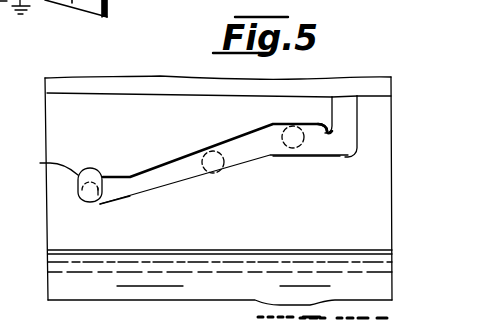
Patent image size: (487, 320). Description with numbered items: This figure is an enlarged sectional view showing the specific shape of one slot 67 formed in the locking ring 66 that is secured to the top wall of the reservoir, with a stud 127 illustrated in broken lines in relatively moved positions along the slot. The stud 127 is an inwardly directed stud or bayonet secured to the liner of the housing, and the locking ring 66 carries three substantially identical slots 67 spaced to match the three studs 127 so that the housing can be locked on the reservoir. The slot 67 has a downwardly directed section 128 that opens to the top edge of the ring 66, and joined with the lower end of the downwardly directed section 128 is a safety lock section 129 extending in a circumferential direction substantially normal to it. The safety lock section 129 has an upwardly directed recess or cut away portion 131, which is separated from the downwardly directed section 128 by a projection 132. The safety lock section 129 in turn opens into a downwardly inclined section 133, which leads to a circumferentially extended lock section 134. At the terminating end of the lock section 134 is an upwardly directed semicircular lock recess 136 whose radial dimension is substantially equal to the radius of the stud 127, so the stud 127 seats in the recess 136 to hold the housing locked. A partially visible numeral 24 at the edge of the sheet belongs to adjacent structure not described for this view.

The locking ring 66 is at (57, 132).
The housing 24 is at (7, 216).
The semicircular lock recess 136 is at (46, 164).
The downwardly inclined section 133 is at (173, 184).
The stud 127 is at (90, 206).
The lock section 134 is at (112, 195).
The cut away portion 131 is at (278, 121).
The projection 132 is at (323, 113).
The slot 67 is at (345, 90).
The safety lock section 129 is at (279, 149).
The downwardly directed section 128 is at (343, 128).